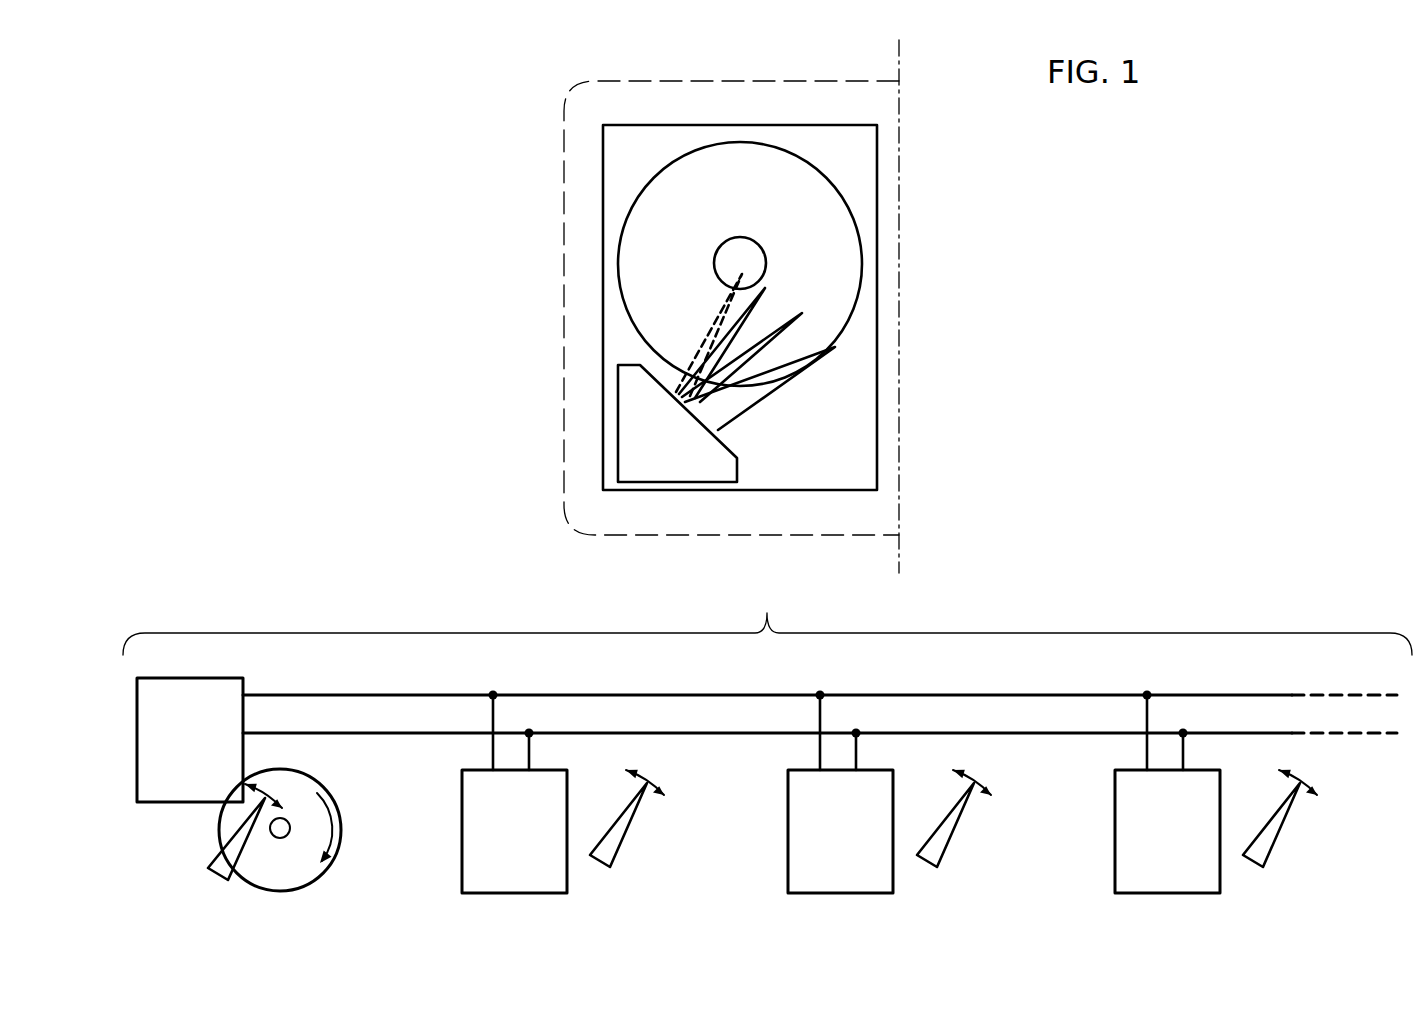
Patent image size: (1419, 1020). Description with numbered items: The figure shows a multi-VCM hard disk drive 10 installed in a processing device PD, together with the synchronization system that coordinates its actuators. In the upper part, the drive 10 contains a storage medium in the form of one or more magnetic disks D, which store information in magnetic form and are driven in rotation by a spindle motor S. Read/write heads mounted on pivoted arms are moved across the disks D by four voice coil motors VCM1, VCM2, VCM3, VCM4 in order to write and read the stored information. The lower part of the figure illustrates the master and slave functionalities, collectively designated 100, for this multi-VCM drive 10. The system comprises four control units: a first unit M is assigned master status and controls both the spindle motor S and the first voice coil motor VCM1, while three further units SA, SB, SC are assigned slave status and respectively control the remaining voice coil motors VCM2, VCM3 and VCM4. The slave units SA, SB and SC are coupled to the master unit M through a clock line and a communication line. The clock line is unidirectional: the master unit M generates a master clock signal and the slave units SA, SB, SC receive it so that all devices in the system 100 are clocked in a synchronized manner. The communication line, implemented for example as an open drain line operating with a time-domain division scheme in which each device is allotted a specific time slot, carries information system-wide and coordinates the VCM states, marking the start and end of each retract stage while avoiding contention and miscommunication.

The multi-VCM hard disk drive 10 is at (938, 285).
The master and slave functionalities 100 is at (1141, 600).
The processing device PD is at (575, 141).
The magnetic disks D is at (635, 250).
The spindle motor S is at (737, 257).
The master unit M is at (183, 790).
The first slave unit SA is at (508, 878).
The second slave unit SB is at (834, 878).
The third slave unit SC is at (1164, 878).
The first voice coil motor VCM1 is at (743, 402).
The second voice coil motor VCM2 is at (755, 353).
The third voice coil motor VCM3 is at (758, 310).
The fourth voice coil motor VCM4 is at (720, 320).